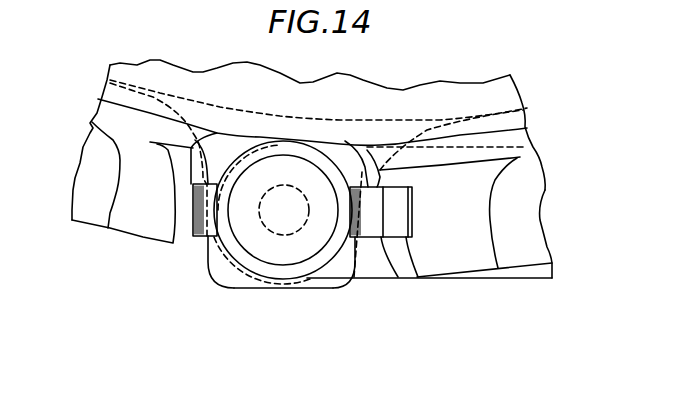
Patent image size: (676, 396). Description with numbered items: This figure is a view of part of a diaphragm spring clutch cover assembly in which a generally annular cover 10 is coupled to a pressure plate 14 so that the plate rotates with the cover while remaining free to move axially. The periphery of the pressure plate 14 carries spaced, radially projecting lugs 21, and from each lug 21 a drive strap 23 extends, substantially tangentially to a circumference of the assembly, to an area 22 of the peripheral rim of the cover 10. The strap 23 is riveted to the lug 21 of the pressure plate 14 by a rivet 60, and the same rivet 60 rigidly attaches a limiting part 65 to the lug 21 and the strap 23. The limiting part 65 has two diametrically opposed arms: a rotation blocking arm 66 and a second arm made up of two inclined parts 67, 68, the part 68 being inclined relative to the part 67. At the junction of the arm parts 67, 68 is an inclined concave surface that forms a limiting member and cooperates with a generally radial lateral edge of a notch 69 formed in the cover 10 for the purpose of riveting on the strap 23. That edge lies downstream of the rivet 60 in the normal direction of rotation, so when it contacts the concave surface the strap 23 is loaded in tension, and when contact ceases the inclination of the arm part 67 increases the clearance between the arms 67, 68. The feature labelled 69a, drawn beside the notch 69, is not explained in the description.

The wristwatch 10 is at (88, 123).
The clasp assembly 14 is at (262, 292).
The housing base 21 is at (313, 288).
The watch strap 22 is at (530, 200).
The strap end portion 23 is at (517, 280).
The rotatable drum 60 is at (282, 257).
The clasp housing 65 is at (255, 268).
The left clamping member 66 is at (188, 240).
The right clamping member 67 is at (363, 245).
The guide member 68 is at (412, 250).
The fabric strap 69 is at (218, 141).
The hidden strap portion 69a is at (366, 150).